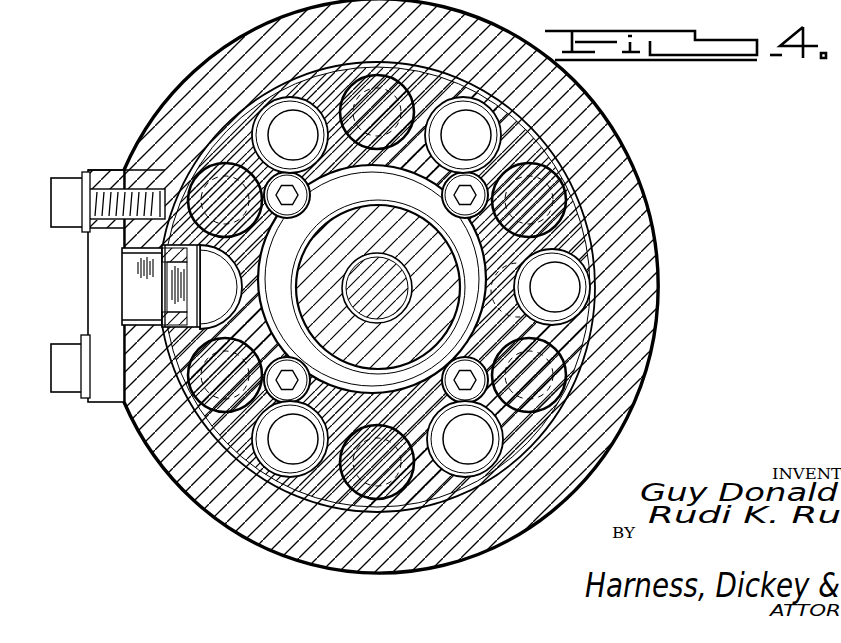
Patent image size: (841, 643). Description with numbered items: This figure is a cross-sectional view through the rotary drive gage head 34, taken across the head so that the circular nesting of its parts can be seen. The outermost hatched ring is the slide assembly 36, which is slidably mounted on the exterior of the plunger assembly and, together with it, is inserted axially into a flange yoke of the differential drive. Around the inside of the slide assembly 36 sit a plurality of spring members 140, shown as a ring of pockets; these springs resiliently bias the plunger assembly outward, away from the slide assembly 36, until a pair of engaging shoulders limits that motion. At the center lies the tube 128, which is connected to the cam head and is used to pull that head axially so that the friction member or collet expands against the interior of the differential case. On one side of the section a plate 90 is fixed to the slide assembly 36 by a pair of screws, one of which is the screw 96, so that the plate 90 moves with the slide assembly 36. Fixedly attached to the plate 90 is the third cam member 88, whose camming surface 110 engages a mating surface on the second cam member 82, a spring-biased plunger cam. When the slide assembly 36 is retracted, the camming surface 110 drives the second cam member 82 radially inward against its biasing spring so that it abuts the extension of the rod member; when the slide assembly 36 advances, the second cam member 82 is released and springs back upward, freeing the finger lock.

The slide assembly 36 is at (641, 173).
The spring members 140 is at (495, 126).
The rotary drive gage head 34 is at (398, 356).
The tube 128 is at (374, 264).
The plate 90 is at (107, 170).
The screw 96 is at (66, 178).
The camming surface 110 is at (166, 318).
The third cam member 88 is at (137, 260).
The second cam member 82 is at (187, 290).